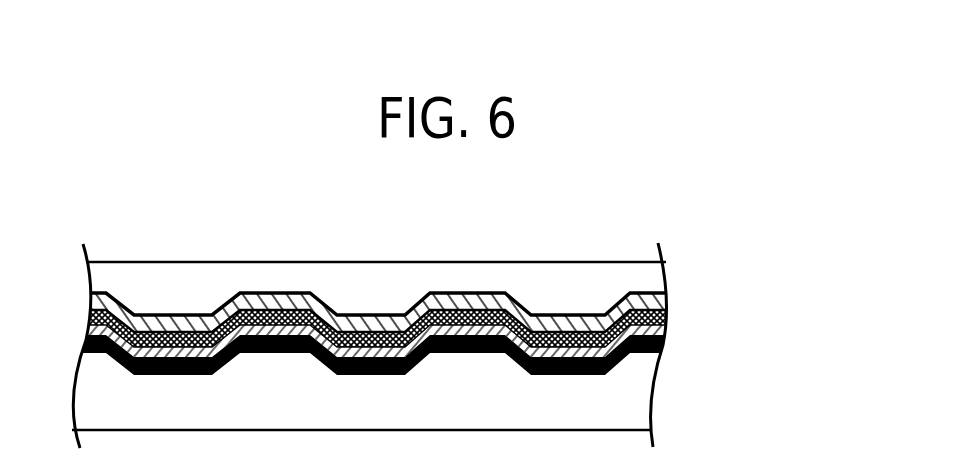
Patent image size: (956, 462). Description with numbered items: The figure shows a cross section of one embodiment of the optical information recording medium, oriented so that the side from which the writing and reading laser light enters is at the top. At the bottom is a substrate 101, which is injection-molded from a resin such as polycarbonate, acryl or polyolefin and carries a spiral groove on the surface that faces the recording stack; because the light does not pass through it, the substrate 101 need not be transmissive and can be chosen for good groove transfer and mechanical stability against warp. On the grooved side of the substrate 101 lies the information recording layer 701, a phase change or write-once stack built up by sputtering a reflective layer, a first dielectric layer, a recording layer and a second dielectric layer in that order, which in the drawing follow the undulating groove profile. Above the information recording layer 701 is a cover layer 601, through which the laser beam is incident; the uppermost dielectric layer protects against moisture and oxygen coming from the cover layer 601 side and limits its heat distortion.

The substrate 101 is at (635, 400).
The cover layer 601 is at (652, 277).
The information recording layer 701 is at (449, 331).